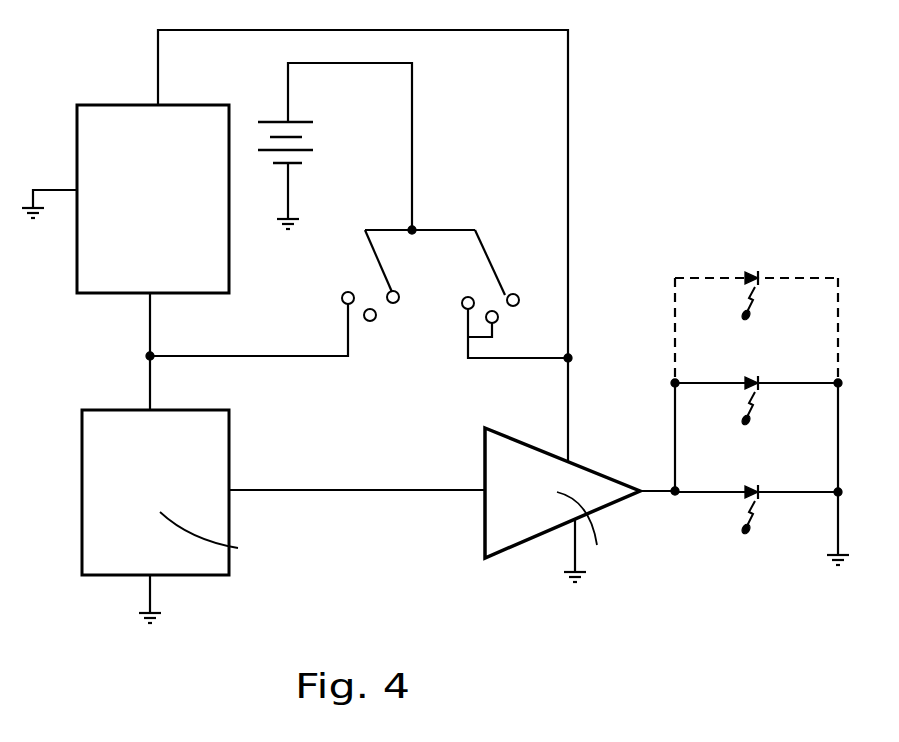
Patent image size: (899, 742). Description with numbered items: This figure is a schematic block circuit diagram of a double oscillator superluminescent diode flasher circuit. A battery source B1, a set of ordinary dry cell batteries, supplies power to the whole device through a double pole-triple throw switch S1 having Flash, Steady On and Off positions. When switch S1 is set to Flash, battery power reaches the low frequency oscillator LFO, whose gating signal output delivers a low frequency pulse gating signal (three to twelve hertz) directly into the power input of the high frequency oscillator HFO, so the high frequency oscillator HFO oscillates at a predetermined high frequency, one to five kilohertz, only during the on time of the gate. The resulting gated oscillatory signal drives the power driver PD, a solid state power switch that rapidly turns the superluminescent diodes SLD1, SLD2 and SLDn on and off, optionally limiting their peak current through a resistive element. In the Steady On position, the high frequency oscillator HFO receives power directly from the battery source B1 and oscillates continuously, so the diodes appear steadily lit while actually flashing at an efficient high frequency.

The low frequency oscillator LFO is at (118, 105).
The high frequency oscillator HFO is at (192, 408).
The battery source B1 is at (335, 146).
The double pole-triple throw switch S1 is at (383, 280).
The power driver PD is at (522, 440).
The superluminescent diode SLD1 is at (758, 494).
The superluminescent diode SLD2 is at (758, 384).
The superluminescent diode SLDn is at (756, 311).